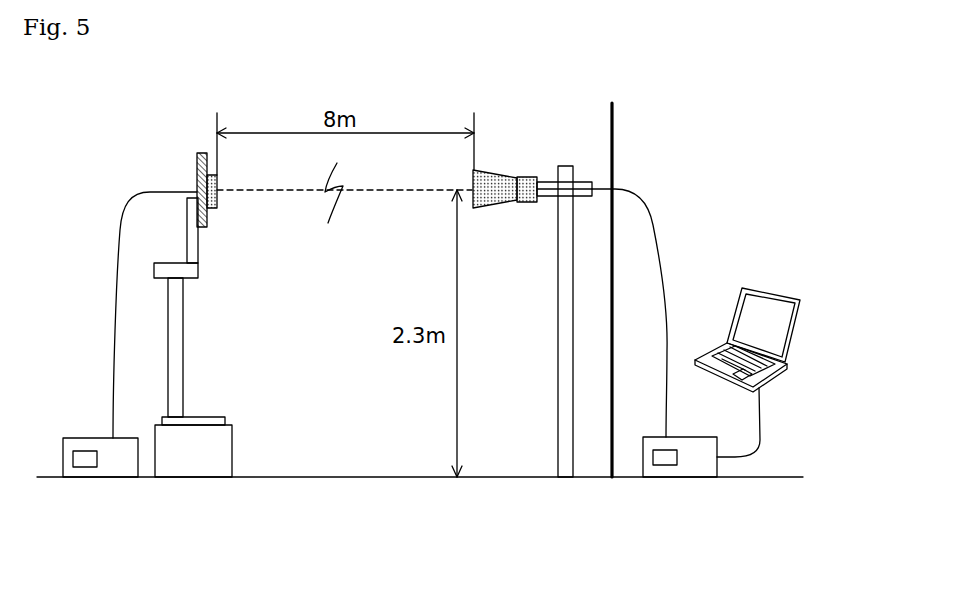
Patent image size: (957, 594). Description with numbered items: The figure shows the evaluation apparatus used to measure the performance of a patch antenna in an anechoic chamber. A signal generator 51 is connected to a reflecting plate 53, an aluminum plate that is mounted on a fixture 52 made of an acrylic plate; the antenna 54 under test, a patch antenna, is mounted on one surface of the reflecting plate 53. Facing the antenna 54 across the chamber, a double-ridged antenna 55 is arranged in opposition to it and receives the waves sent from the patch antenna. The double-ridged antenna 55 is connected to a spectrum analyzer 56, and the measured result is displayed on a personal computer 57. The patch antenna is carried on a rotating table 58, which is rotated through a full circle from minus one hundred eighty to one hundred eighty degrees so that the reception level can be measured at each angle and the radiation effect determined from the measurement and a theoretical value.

The signal generator 51 is at (103, 476).
The fixture 52 is at (193, 253).
The reflecting plate 53 is at (197, 169).
The antenna 54 is at (218, 200).
The double-ridged antenna 55 is at (497, 178).
The spectrum analyzer 56 is at (663, 468).
The personal computer 57 is at (763, 287).
The rotating table 58 is at (192, 470).